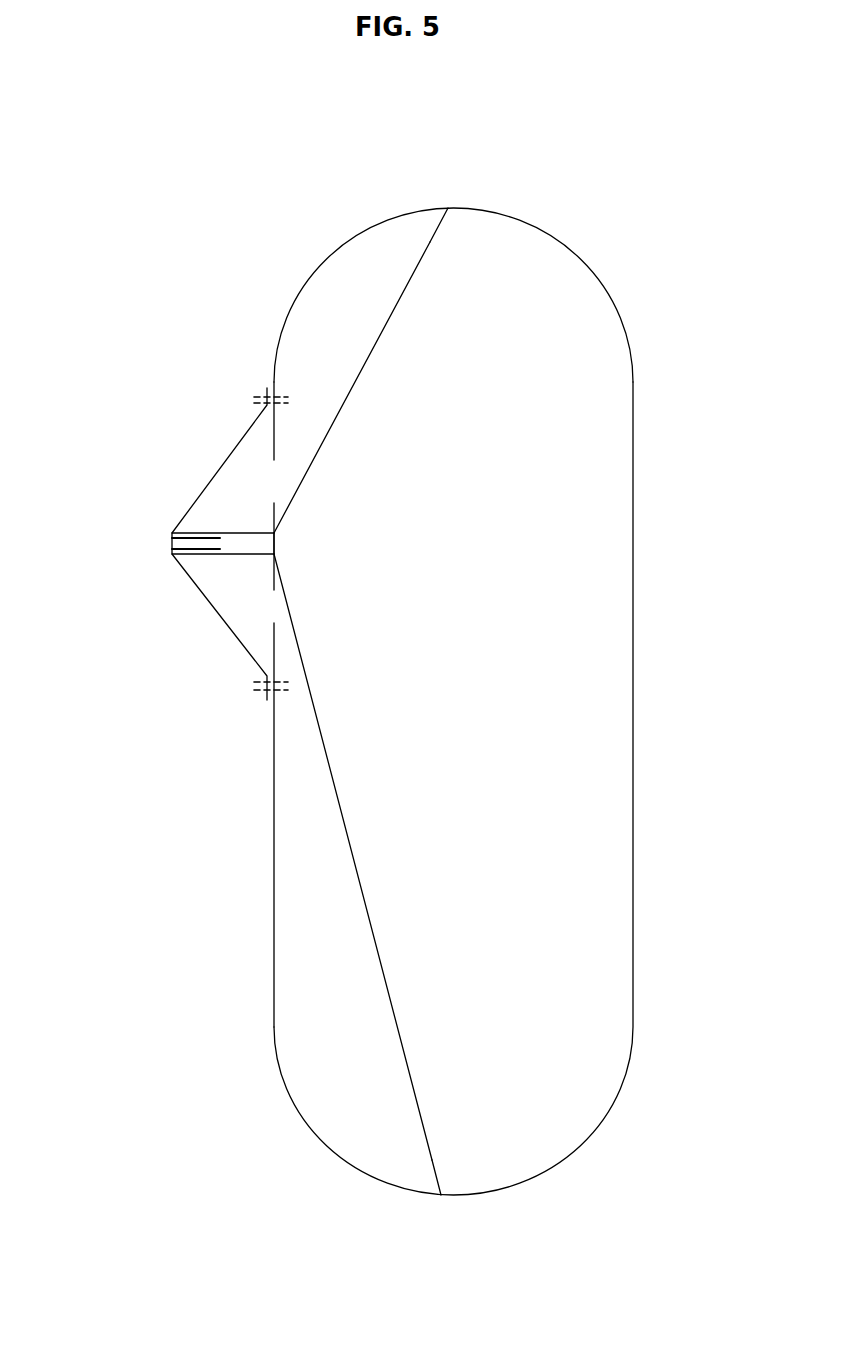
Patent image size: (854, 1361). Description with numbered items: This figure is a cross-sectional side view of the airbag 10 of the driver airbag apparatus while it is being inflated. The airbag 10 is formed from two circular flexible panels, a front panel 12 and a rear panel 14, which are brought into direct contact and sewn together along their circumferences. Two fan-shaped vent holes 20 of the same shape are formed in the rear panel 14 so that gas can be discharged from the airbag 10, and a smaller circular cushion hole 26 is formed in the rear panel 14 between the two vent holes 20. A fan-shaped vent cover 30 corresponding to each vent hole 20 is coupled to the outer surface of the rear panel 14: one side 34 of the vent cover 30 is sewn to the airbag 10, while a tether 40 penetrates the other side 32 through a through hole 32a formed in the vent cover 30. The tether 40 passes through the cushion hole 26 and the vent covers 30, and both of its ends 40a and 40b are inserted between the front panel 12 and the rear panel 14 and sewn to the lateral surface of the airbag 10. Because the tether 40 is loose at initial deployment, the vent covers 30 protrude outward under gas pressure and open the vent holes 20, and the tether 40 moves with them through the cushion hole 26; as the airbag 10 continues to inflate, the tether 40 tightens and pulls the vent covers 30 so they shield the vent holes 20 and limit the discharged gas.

The airbag 10 is at (463, 663).
The front panel 12 is at (610, 295).
The rear panel 14 is at (300, 288).
The vent hole 20 is at (278, 490).
The cushion hole 26 is at (276, 554).
The vent cover 30 is at (236, 533).
The other side of the vent cover 32 is at (236, 556).
The through hole 32a is at (170, 551).
The one side of the vent cover 34 is at (240, 435).
The tether 40 is at (399, 679).
The end of the tether 40a is at (449, 210).
The end of the tether 40b is at (442, 1193).